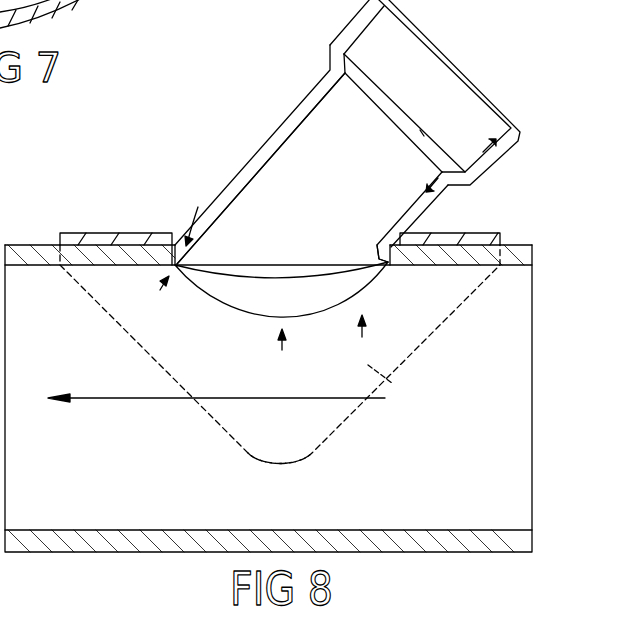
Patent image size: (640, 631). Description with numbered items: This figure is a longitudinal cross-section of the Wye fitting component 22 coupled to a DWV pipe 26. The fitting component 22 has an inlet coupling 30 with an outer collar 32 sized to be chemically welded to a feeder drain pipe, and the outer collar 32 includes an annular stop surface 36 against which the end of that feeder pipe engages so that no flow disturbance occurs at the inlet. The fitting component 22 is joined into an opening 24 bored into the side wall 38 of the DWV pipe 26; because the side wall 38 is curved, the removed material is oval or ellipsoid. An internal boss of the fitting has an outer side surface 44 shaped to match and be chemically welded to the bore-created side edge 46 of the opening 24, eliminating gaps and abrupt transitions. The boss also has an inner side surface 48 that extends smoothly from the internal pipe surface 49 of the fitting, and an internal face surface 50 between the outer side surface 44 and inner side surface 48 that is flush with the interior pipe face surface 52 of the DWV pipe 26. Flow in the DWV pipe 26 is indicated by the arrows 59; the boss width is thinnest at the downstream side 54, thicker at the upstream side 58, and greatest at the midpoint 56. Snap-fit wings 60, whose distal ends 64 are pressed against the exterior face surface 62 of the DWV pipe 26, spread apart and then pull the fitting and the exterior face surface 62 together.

In FIG. 8, the Wye fitting component 22 is at (204, 171).
In FIG. 8, the opening 24 is at (195, 215).
In FIG. 7, the DWV pipe 26 is at (118, 0).
In FIG. 8, the DWV pipe 26 is at (537, 398).
In FIG. 8, the inlet coupling 30 is at (461, 66).
In FIG. 8, the outer collar 32 is at (352, 35).
In FIG. 8, the annular stop surface 36 is at (420, 132).
In FIG. 8, the side wall 38 is at (520, 255).
In FIG. 8, the outer side surface 44 is at (172, 258).
In FIG. 8, the side edge 46 is at (373, 257).
In FIG. 8, the inner side surface 48 is at (372, 234).
In FIG. 8, the internal pipe surface 49 is at (218, 213).
In FIG. 8, the internal face surface 50 is at (185, 275).
In FIG. 8, the interior pipe face surface 52 is at (500, 346).
In FIG. 8, the downstream side 54 is at (157, 292).
In FIG. 8, the midpoint 56 is at (282, 352).
In FIG. 8, the upstream side 58 is at (362, 338).
In FIG. 8, the arrows 59 is at (118, 399).
In FIG. 8, the snap-fit wings 60 is at (392, 383).
In FIG. 8, the exterior face surface 62 is at (506, 241).
In FIG. 8, the distal ends 64 is at (280, 465).